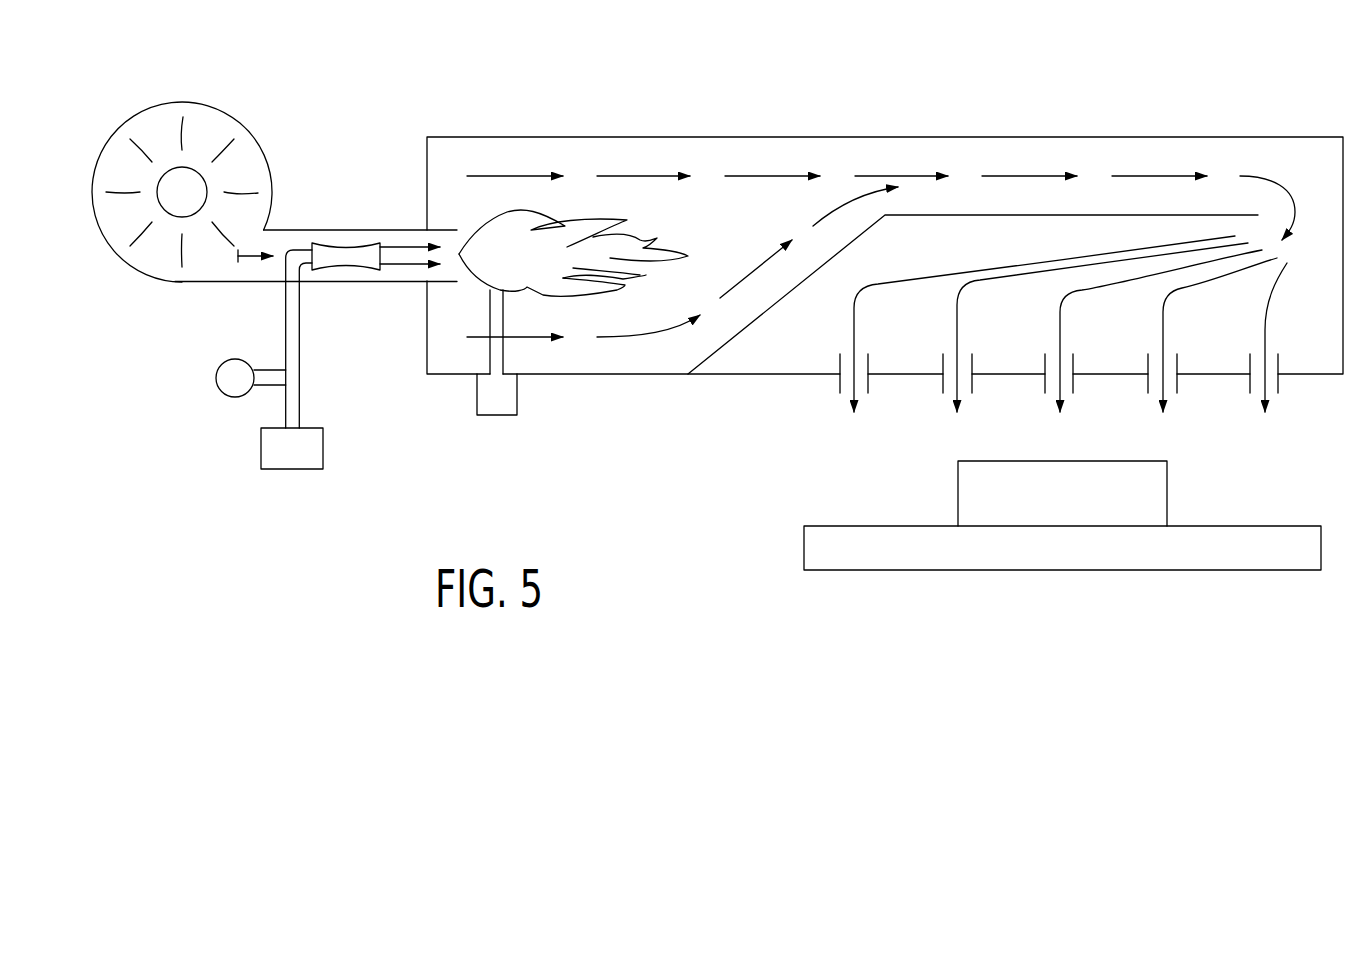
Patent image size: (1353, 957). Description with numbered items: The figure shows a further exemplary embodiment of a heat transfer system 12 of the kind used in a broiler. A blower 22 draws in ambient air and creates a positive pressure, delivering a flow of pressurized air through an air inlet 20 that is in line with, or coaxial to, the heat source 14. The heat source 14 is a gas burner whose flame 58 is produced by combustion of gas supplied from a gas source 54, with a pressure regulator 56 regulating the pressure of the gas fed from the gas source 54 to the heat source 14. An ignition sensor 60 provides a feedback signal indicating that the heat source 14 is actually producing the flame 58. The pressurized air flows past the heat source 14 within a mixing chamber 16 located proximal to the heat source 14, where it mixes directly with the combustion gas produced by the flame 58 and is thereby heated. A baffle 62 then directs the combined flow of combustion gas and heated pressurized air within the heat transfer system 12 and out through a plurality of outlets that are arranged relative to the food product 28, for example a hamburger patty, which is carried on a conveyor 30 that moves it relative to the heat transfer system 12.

The heat transfer system 12 is at (920, 60).
The heat source 14 is at (445, 230).
The mixing chamber 16 is at (503, 200).
The air inlet 20 is at (283, 232).
The blower 22 is at (137, 113).
The food product 28 is at (1075, 504).
The conveyor 30 is at (920, 525).
The gas source 54 is at (323, 450).
The pressure regulator 56 is at (223, 393).
The flame 58 is at (663, 247).
The ignition sensor 60 is at (517, 395).
The baffle 62 is at (952, 214).